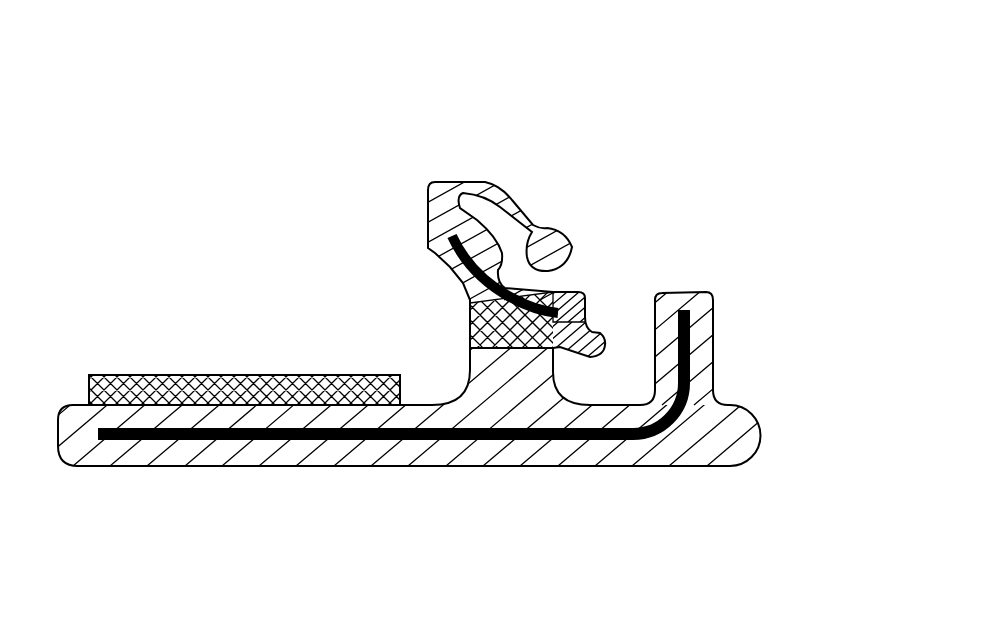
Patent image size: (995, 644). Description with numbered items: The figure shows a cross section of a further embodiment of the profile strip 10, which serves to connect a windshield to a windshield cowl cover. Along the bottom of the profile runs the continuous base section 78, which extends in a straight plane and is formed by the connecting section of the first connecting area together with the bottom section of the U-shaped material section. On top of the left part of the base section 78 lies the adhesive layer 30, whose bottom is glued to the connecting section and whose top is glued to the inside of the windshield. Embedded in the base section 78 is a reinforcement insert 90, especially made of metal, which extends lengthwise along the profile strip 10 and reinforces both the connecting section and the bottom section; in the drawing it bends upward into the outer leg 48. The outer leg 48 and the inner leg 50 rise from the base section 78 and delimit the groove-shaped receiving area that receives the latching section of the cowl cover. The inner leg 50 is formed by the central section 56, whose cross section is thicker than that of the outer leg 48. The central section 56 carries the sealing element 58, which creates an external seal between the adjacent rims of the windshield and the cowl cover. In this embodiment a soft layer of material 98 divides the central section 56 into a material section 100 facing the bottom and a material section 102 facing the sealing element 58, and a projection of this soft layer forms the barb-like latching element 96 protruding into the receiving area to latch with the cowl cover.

The profile strip 10 is at (621, 122).
The adhesive layer 30 is at (169, 393).
The outer leg 48 is at (705, 345).
The inner leg 50 is at (446, 429).
The central section 56 is at (487, 384).
The sealing element 58 is at (504, 245).
The base section 78 is at (345, 455).
The reinforcement insert 90 is at (226, 441).
The latching element 96 is at (596, 340).
The soft layer of material 98 is at (470, 323).
The material section facing the bottom 100 is at (470, 378).
The material section facing the sealing element 102 is at (578, 297).